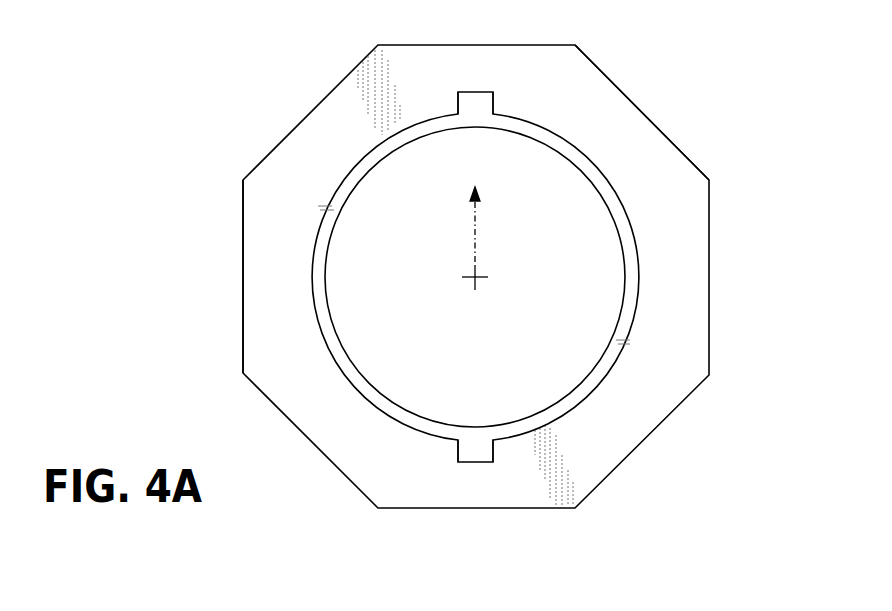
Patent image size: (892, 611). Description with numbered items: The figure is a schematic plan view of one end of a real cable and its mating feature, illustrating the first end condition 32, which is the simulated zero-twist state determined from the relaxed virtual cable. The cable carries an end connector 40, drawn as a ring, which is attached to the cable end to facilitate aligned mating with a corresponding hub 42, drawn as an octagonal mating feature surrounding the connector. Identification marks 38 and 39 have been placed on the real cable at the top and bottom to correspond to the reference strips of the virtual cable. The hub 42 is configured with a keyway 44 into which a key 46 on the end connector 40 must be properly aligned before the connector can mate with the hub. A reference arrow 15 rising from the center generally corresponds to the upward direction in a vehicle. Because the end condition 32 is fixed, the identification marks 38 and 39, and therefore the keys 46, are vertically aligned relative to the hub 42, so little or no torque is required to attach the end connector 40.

The first end condition 32 is at (242, 97).
The hub 42 is at (638, 142).
The end connector 40 is at (317, 303).
The identification mark 38 is at (478, 92).
The identification mark 39 is at (470, 462).
The keyway 44 is at (490, 100).
The key 46 is at (470, 102).
The reference arrow 15 is at (477, 232).